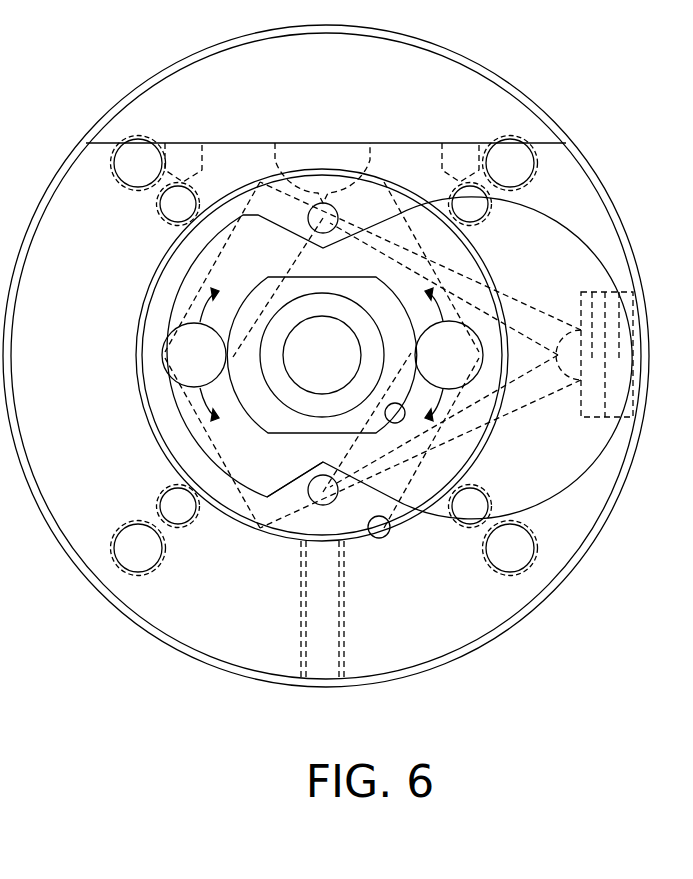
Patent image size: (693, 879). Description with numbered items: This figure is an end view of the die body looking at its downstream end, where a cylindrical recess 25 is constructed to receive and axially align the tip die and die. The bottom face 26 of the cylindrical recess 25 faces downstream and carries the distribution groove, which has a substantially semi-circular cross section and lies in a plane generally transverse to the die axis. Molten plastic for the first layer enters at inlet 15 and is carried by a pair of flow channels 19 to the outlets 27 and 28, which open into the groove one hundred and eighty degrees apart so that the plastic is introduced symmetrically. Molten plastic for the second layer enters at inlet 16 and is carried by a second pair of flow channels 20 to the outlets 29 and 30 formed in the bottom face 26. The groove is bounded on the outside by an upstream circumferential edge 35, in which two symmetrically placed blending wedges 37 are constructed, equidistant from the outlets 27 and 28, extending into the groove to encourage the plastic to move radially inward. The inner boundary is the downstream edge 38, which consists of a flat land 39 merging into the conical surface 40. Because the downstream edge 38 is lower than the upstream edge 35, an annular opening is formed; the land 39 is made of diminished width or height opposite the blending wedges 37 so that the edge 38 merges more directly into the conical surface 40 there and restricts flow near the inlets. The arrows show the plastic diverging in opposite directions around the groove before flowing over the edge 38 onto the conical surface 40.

The inlet 15 is at (318, 152).
The inlet 16 is at (618, 296).
The flow channels 19 is at (396, 212).
The second pair of flow channels 20 is at (522, 306).
The cylindrical recess 25 is at (390, 525).
The bottom face 26 is at (240, 503).
The outlet 27 is at (181, 368).
The outlet 28 is at (436, 368).
The outlet 29 is at (327, 212).
The outlet 30 is at (320, 498).
The upstream circumferential edge 35 is at (170, 411).
The blending wedges 37 is at (262, 190).
The downstream edge 38 is at (402, 420).
The flat land 39 is at (264, 430).
The conical surface 40 is at (305, 406).